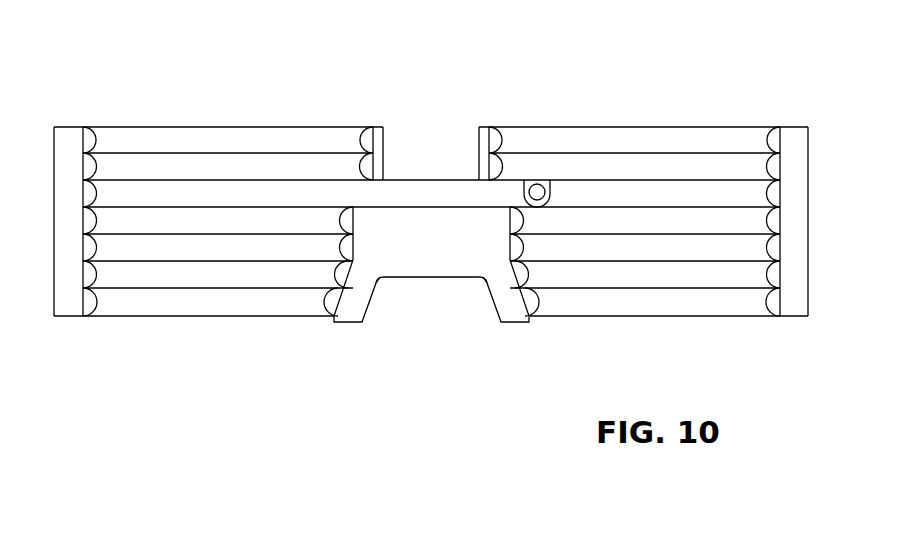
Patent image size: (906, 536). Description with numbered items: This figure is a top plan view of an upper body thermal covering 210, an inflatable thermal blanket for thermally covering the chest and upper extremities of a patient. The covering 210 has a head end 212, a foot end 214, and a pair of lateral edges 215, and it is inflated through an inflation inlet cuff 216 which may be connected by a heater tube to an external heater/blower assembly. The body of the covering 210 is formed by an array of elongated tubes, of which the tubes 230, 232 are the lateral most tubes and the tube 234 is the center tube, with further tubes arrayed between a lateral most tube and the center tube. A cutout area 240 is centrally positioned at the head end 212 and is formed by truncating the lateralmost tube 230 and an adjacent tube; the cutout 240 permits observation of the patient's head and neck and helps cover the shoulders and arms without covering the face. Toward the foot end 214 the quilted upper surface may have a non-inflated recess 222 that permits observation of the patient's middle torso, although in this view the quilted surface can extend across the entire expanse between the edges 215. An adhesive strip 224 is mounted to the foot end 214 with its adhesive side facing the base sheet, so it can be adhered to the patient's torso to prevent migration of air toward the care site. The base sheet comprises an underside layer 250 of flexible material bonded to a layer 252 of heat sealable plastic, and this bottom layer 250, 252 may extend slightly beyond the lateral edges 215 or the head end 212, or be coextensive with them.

The upper body thermal covering 210 is at (226, 96).
The head end 212 is at (724, 127).
The foot end 214 is at (560, 316).
The lateral edges 215 is at (70, 130).
The inflation inlet cuff 216 is at (540, 184).
The non-inflated recess 222 is at (453, 248).
The adhesive strip 224 is at (452, 263).
The lateral most tube 230 is at (594, 133).
The lateral most tube 232 is at (643, 304).
The center tube 234 is at (661, 190).
The cutout area 240 is at (434, 122).
The underside layer 250 is at (378, 127).
The layer of heat sealable plastic 252 is at (487, 127).